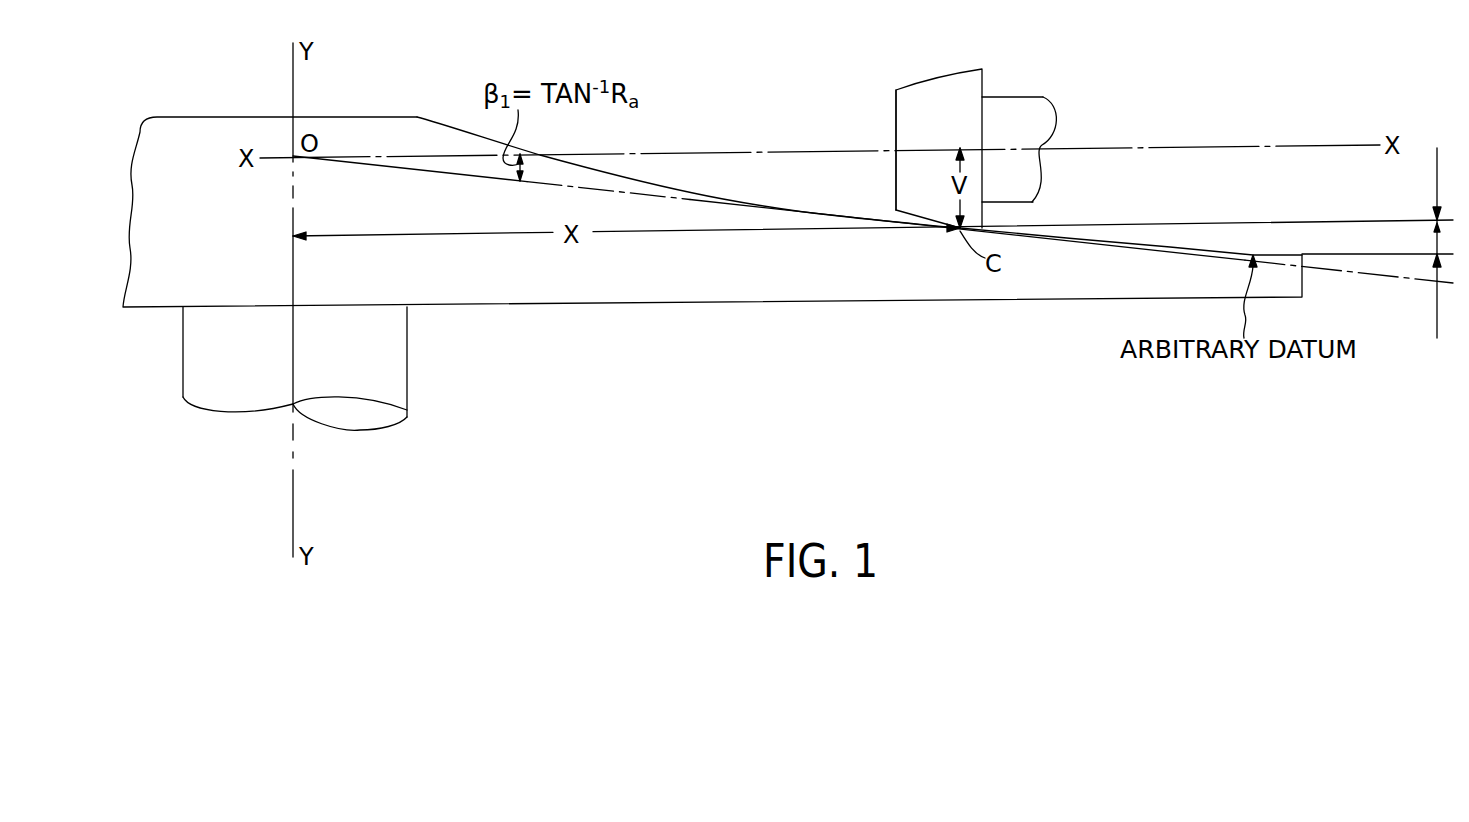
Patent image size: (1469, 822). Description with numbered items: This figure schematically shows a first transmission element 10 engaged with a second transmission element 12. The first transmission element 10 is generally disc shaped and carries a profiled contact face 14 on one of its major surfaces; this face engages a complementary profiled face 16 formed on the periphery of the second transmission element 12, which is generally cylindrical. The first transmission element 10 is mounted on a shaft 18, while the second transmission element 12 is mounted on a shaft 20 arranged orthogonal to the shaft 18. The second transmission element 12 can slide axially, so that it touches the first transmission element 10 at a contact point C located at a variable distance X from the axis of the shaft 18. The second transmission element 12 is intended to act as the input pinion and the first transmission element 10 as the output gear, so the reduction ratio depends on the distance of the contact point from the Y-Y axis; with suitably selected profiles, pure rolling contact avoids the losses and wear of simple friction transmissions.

The first transmission element 10 is at (910, 287).
The second transmission element 12 is at (957, 92).
The profiled contact face 14 is at (693, 193).
The complementary profiled face 16 is at (915, 86).
The shaft 18 is at (387, 370).
The shaft 20 is at (1020, 113).